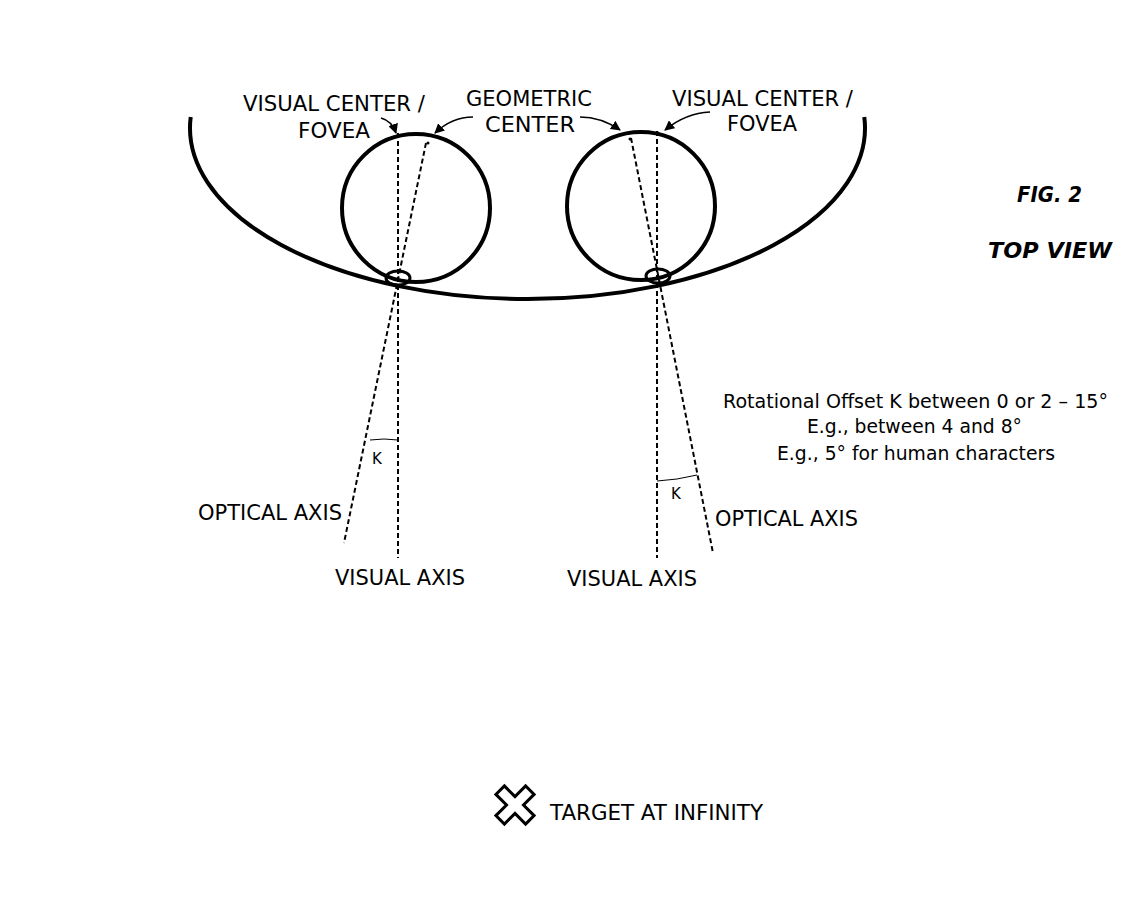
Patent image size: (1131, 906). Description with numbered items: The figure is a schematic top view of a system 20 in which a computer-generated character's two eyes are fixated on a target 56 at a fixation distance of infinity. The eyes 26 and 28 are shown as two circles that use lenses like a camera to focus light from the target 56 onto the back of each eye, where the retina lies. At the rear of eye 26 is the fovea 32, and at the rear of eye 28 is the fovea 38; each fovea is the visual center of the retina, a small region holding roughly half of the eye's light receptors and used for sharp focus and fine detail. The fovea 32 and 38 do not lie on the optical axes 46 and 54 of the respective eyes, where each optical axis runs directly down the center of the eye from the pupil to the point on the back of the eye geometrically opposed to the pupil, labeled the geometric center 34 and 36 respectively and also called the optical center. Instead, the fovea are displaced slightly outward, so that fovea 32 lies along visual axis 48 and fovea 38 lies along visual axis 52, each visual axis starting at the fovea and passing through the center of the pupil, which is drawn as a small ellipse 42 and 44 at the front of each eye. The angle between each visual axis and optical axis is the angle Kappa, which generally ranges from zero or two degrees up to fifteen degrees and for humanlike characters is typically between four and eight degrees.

The system 20 is at (350, 42).
The eye 26 is at (483, 163).
The eye 28 is at (710, 186).
The fovea 32 is at (391, 151).
The geometric center 34 is at (429, 146).
The geometric center 36 is at (624, 144).
The fovea 38 is at (661, 144).
The left pupil 42 is at (390, 285).
The right pupil 44 is at (660, 283).
The optical axis 46 is at (378, 390).
The visual axis 48 is at (399, 417).
The visual axis 52 is at (657, 428).
The optical axis 54 is at (678, 378).
The target 56 is at (490, 810).